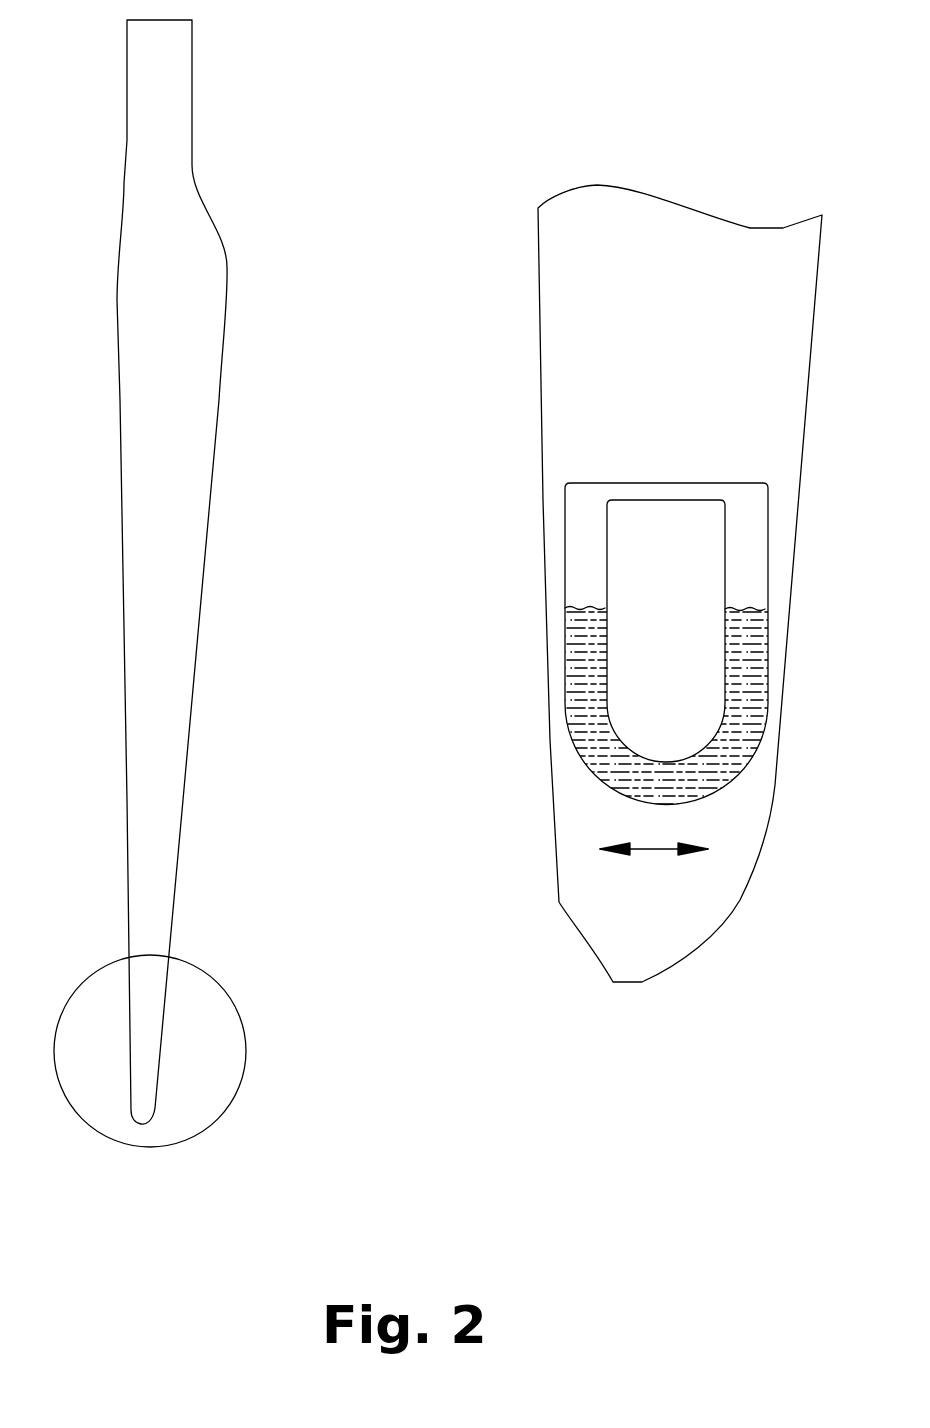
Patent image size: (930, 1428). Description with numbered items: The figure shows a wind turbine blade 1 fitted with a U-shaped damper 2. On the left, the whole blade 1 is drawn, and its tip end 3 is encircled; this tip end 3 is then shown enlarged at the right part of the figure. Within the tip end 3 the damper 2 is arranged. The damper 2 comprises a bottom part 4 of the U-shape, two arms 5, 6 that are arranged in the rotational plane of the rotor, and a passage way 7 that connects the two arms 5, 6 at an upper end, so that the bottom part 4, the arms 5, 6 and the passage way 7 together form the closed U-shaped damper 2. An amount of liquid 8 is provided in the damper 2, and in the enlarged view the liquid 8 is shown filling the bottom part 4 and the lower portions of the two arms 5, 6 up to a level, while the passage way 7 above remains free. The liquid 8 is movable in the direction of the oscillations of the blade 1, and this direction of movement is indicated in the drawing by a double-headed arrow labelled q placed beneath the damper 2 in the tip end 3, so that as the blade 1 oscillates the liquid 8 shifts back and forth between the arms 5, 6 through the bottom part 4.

The blade 1 is at (135, 602).
The U-shaped damper 2 is at (770, 659).
The tip end 3 is at (225, 987).
The bottom part 4 is at (625, 802).
The arm 5 is at (563, 601).
The arm 6 is at (768, 523).
The passage way 7 is at (643, 490).
The liquid 8 is at (738, 733).
The heat flow q is at (656, 870).